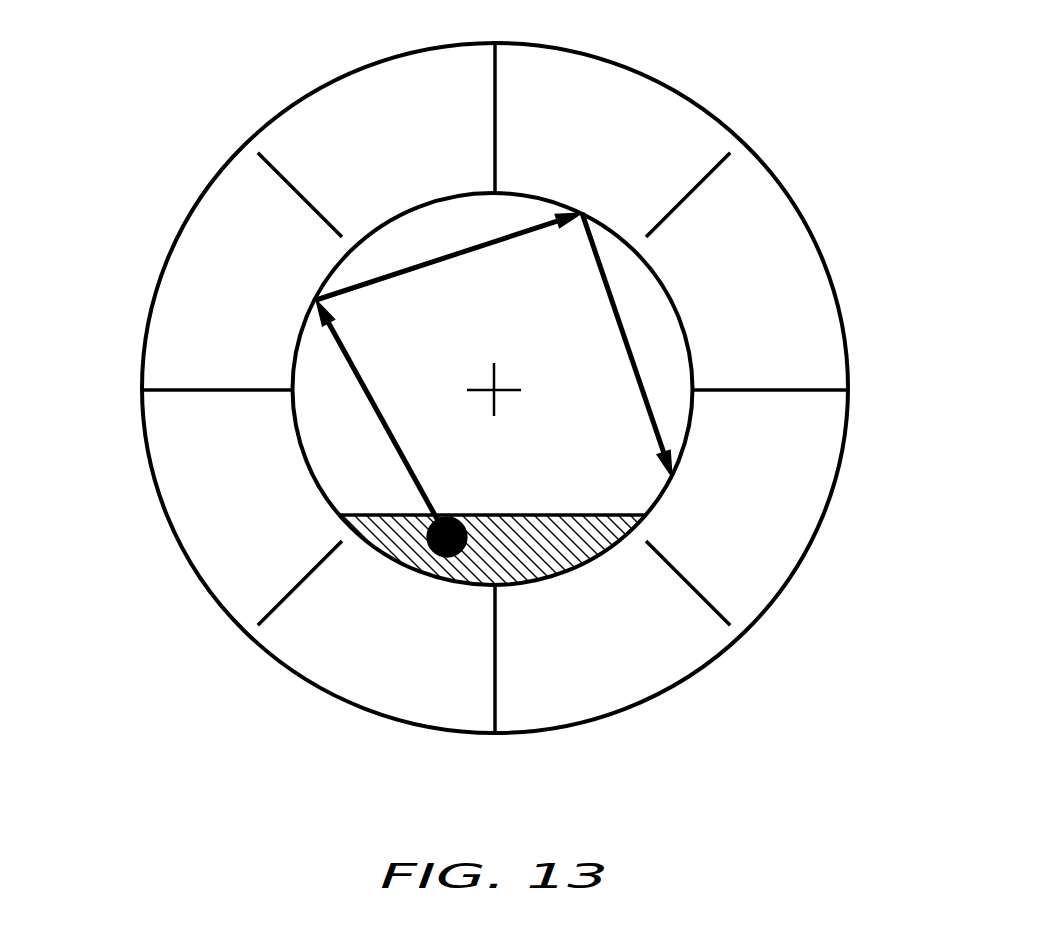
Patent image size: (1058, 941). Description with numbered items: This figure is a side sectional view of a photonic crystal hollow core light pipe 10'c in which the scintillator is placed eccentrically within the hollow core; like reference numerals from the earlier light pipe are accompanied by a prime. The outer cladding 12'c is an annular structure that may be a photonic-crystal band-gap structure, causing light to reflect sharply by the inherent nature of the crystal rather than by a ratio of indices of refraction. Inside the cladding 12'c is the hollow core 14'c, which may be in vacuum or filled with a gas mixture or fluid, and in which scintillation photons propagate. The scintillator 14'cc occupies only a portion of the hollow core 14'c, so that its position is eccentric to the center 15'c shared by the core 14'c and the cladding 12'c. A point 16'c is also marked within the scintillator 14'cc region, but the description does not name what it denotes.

The photonic crystal hollow core light pipe 10'c is at (489, 381).
The cladding 12'c is at (445, 388).
The hollow core 14'c is at (615, 389).
The scintillator 14'cc is at (526, 525).
The center 15'c is at (449, 359).
The mass / weight point 16'c is at (470, 492).